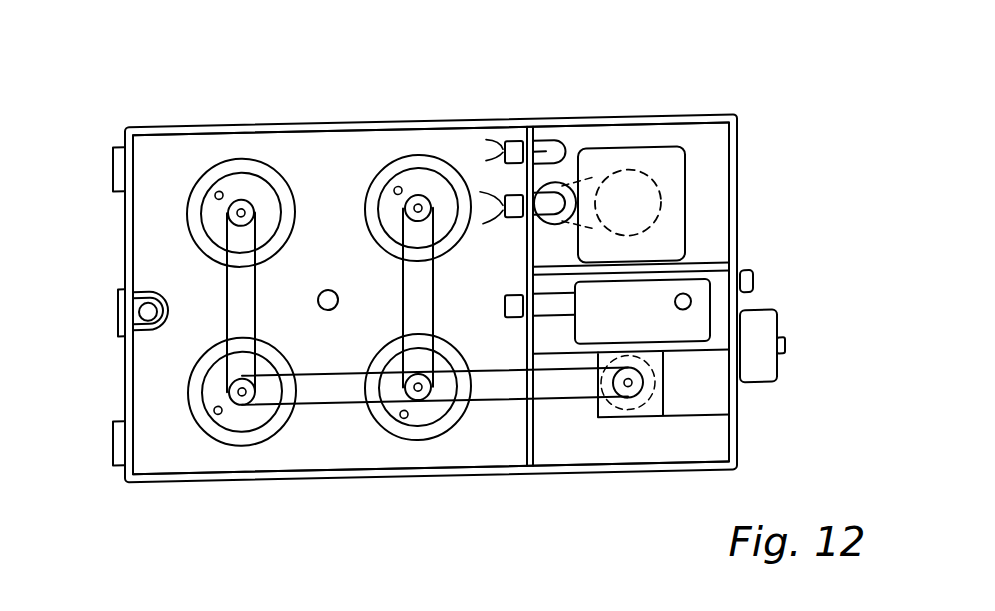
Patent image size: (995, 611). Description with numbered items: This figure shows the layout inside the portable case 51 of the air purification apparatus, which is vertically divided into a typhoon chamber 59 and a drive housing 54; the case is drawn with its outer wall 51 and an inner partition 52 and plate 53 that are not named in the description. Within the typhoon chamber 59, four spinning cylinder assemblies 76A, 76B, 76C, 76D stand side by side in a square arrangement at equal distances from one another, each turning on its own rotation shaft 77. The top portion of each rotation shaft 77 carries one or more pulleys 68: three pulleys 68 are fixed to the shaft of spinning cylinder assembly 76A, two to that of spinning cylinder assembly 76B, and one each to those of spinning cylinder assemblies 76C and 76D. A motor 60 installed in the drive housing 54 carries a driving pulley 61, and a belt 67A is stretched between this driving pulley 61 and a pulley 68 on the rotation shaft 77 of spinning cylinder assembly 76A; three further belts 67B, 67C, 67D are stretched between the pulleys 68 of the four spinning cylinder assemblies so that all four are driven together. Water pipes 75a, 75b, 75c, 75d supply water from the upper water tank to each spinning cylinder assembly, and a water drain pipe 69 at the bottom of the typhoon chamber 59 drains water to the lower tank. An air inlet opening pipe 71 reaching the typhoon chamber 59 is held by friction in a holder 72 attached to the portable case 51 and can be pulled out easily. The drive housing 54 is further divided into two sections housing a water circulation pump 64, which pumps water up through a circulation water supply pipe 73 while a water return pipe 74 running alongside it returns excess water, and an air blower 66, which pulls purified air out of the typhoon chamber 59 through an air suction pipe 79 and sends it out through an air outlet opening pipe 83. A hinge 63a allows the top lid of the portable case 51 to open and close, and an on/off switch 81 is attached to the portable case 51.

The portable case 51 is at (418, 125).
The partition wall 52 is at (530, 424).
The base plate 53 is at (293, 145).
The drive housing 54 is at (635, 133).
The typhoon chamber 59 is at (277, 155).
The motor 60 is at (644, 391).
The driving pulley 61 is at (637, 393).
The hinge 63a is at (112, 165).
The water circulation pump 64 is at (663, 195).
The air blower 66 is at (703, 284).
The belt 67A is at (570, 398).
The belt 67B is at (337, 405).
The belt 67C is at (402, 288).
The belt 67D is at (223, 282).
The pulley 68 is at (246, 211).
The water drain pipe 69 is at (322, 313).
The air inlet opening pipe 71 is at (148, 316).
The holder 72 is at (169, 307).
The circulation water supply pipe 73 is at (513, 216).
The water return pipe 74 is at (538, 147).
The water pipe 75a is at (401, 419).
The water pipe 75b is at (213, 416).
The water pipe 75c is at (395, 187).
The water pipe 75d is at (214, 191).
The spinning cylinder assembly 76A is at (447, 436).
The spinning cylinder assembly 76B is at (229, 445).
The spinning cylinder assembly 76C is at (438, 154).
The spinning cylinder assembly 76D is at (212, 166).
The rotation shaft 77 is at (236, 214).
The air suction pipe 79 is at (512, 317).
The on/off switch 81 is at (780, 366).
The air outlet opening pipe 83 is at (691, 301).